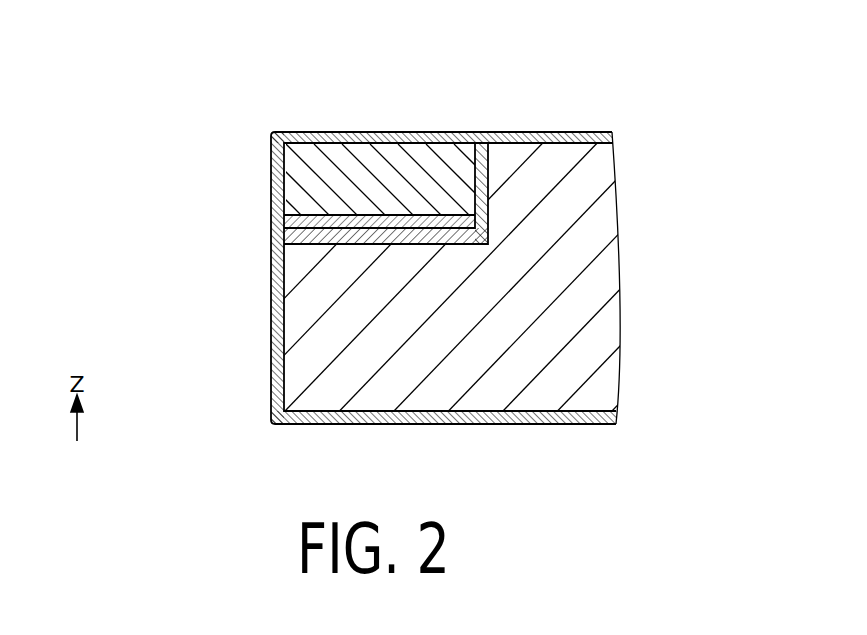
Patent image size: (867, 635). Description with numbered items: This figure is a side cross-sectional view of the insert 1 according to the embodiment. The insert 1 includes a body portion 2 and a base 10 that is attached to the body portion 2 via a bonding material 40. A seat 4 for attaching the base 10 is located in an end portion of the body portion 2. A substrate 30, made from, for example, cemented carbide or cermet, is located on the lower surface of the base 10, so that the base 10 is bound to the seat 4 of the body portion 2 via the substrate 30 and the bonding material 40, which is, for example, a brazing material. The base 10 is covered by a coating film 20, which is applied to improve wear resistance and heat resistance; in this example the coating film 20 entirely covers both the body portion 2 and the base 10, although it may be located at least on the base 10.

The insert 1 is at (644, 59).
The body portion 2 is at (548, 188).
The seat 4 is at (346, 250).
The base 10 is at (359, 185).
The coating film 20 is at (428, 132).
The substrate 30 is at (296, 222).
The bonding material 40 is at (300, 238).